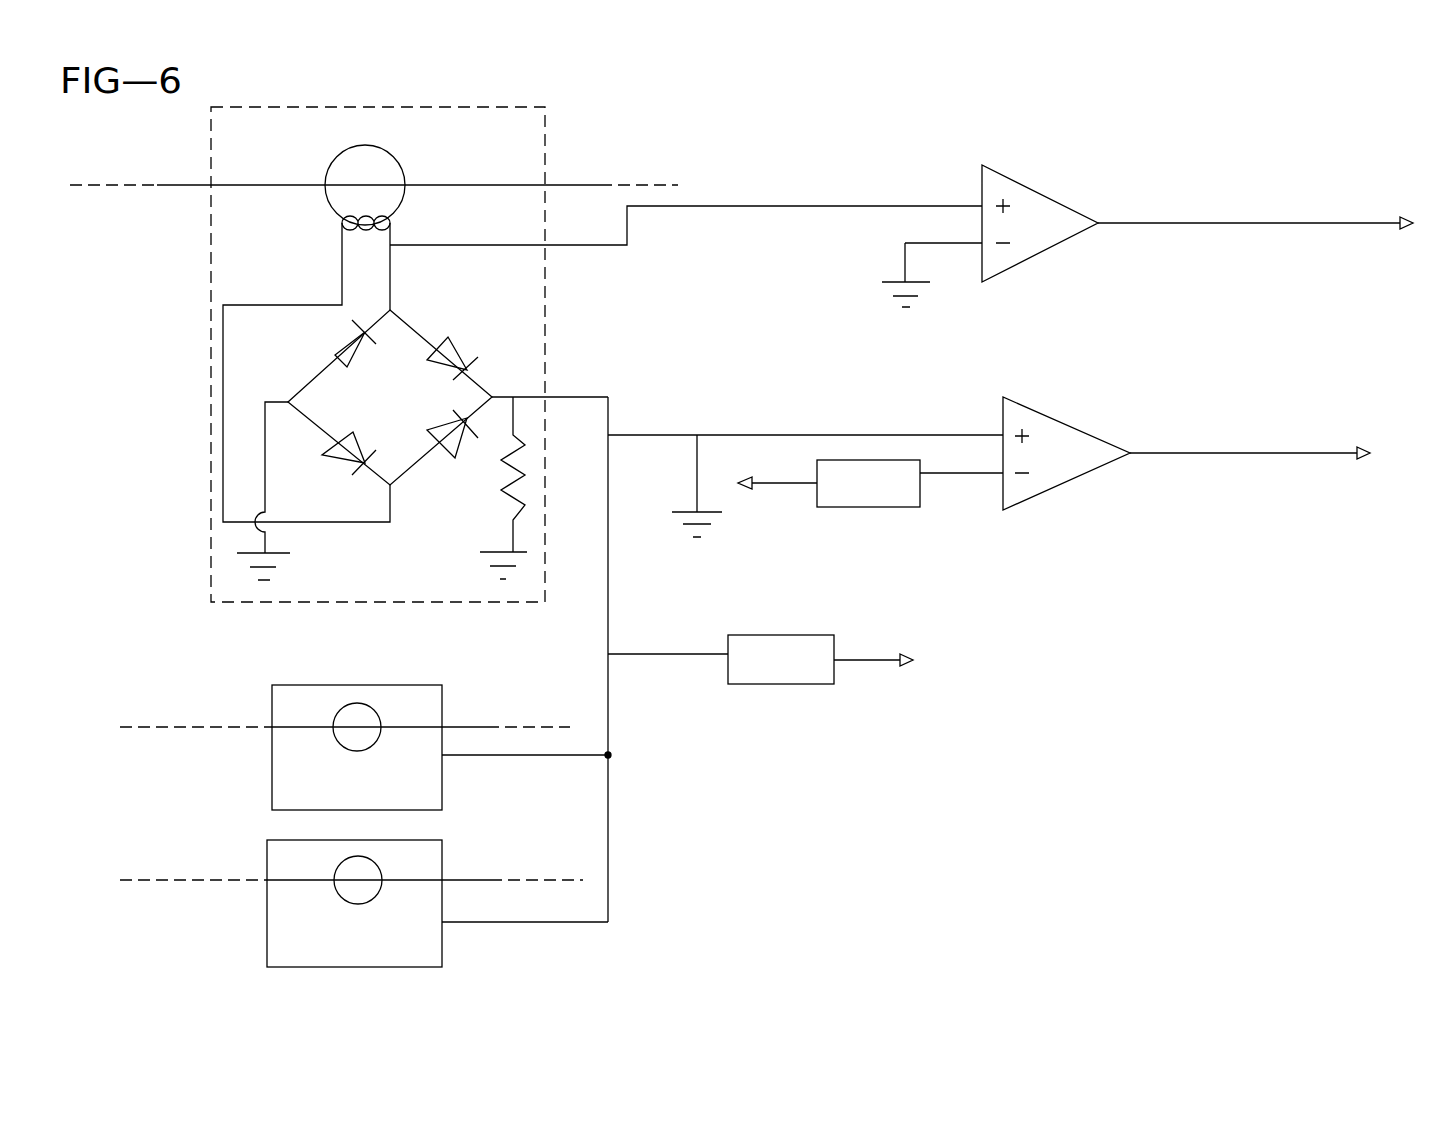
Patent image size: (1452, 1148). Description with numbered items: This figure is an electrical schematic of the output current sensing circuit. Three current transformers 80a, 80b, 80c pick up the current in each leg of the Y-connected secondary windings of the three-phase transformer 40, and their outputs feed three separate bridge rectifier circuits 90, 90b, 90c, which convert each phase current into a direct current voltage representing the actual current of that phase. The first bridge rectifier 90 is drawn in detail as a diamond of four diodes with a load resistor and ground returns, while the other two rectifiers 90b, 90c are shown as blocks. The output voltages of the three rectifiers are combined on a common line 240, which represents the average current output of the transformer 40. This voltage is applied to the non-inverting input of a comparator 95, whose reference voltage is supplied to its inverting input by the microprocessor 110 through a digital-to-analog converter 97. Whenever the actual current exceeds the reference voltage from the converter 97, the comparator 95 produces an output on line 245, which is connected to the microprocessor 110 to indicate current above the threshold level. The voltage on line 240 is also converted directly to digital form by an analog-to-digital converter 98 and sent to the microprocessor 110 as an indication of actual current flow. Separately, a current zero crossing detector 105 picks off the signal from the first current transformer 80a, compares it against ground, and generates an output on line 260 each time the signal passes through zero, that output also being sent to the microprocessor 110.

The three-phase transformer 40 is at (364, 516).
The current transformer 80a is at (377, 162).
The current transformer 80b is at (378, 717).
The current transformer 80c is at (380, 870).
The bridge rectifier circuit 90 is at (238, 265).
The bridge rectifier circuit 90b is at (272, 753).
The bridge rectifier circuit 90c is at (272, 943).
The comparator 95 is at (1077, 478).
The digital-to-analog converter 97 is at (922, 500).
The analog-to-digital converter 98 is at (745, 684).
The current zero crossing detector 105 is at (1048, 193).
The microprocessor 110 is at (1115, 454).
The line 240 is at (670, 435).
The line 245 is at (1253, 453).
The line 260 is at (1195, 223).